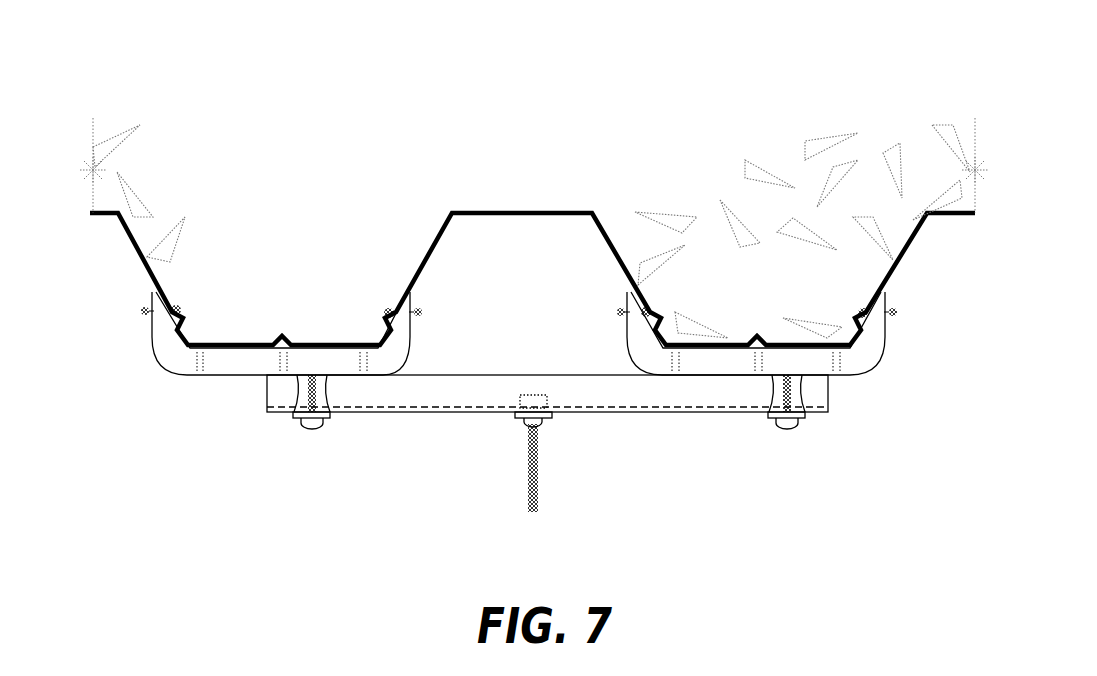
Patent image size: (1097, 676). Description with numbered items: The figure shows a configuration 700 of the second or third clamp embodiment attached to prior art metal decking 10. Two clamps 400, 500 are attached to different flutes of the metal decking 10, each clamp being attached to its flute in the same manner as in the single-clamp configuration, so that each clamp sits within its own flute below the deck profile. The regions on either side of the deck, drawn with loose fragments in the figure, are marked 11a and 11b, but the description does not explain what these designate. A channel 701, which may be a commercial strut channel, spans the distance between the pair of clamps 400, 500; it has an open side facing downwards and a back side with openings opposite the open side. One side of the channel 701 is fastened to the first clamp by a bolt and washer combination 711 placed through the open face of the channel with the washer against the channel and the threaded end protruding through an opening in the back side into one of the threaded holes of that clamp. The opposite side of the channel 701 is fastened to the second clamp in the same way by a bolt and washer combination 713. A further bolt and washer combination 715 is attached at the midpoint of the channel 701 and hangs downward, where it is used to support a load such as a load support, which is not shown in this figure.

The metal decking 10 is at (315, 153).
The insulation 11a is at (258, 215).
The insulation 11b is at (714, 205).
The configuration 700 is at (475, 122).
The channel 701 is at (862, 390).
The bolt and washer combination 711 is at (785, 442).
The bolt and washer combination 713 is at (312, 447).
The bolt and washer combination 715 is at (558, 475).
The clamp 400 is at (436, 294).
The clamp 500 is at (602, 327).